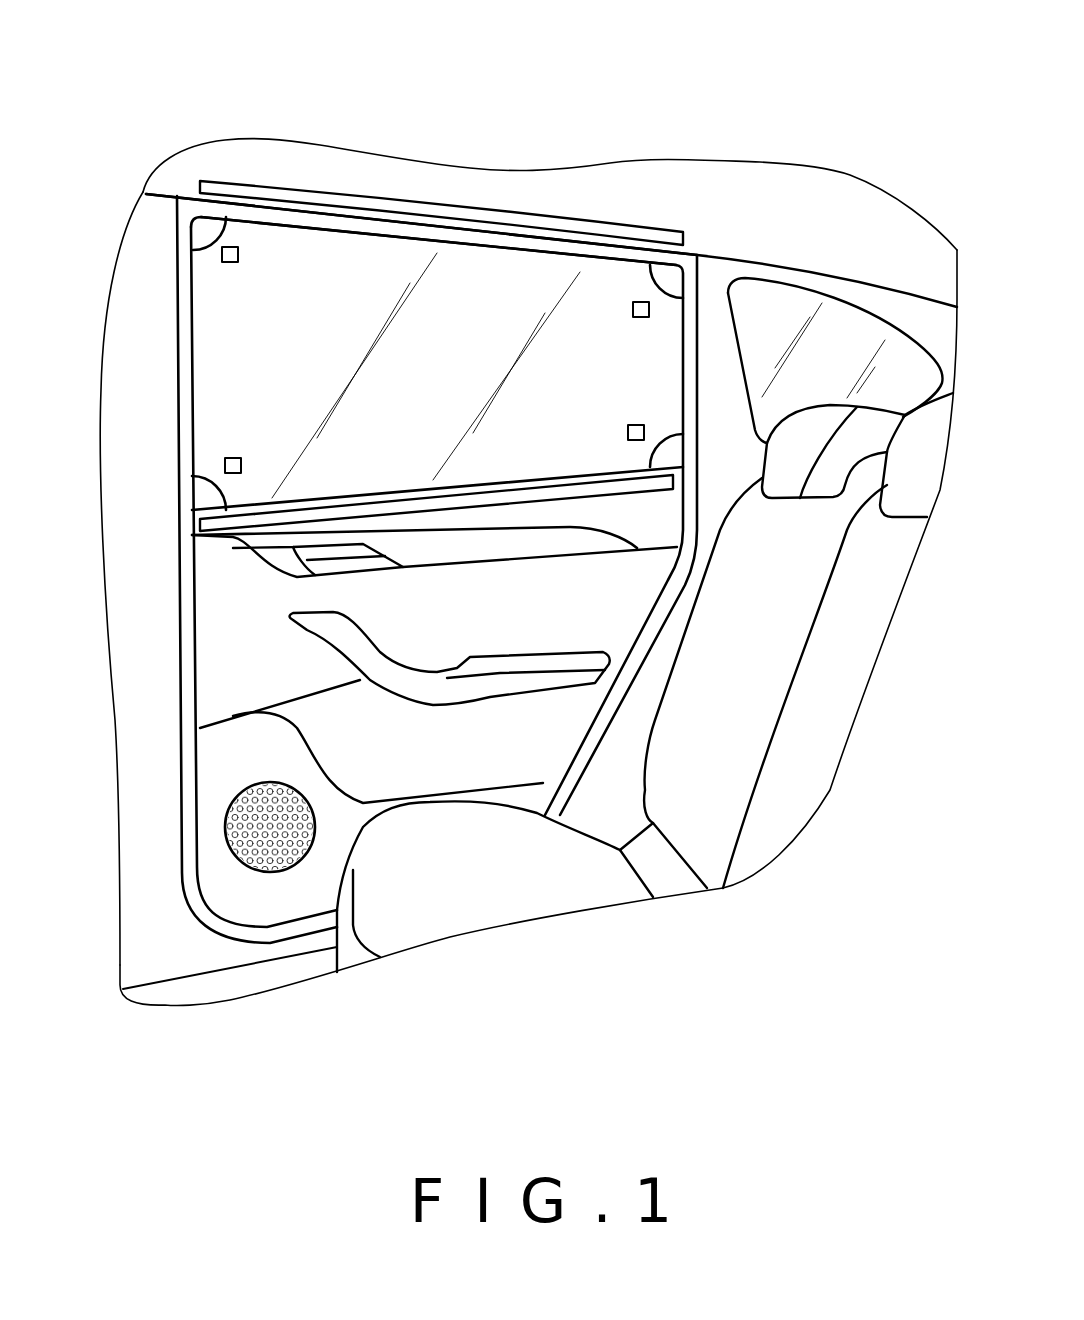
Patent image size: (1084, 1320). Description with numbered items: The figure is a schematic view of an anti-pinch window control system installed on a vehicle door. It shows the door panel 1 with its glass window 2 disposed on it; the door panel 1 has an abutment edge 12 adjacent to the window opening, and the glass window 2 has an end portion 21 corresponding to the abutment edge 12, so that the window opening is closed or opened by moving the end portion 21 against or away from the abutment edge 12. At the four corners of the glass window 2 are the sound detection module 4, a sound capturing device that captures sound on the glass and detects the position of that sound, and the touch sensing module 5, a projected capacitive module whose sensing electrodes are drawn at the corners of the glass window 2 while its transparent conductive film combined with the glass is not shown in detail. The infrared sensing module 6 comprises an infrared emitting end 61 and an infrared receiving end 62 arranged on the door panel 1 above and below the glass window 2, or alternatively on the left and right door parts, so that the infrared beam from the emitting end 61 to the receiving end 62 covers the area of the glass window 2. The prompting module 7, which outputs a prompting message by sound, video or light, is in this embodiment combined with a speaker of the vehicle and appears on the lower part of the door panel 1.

The door panel 1 is at (180, 209).
The abutment edge 12 is at (284, 222).
The glass window 2 is at (228, 366).
The end portion 21 is at (336, 235).
The sound detection module 4 is at (207, 492).
The touch sensing module 5 is at (225, 463).
The infrared sensing module 6 is at (449, 273).
The infrared emitting end 61 is at (603, 480).
The infrared receiving end 62 is at (655, 231).
The prompting module 7 is at (227, 805).